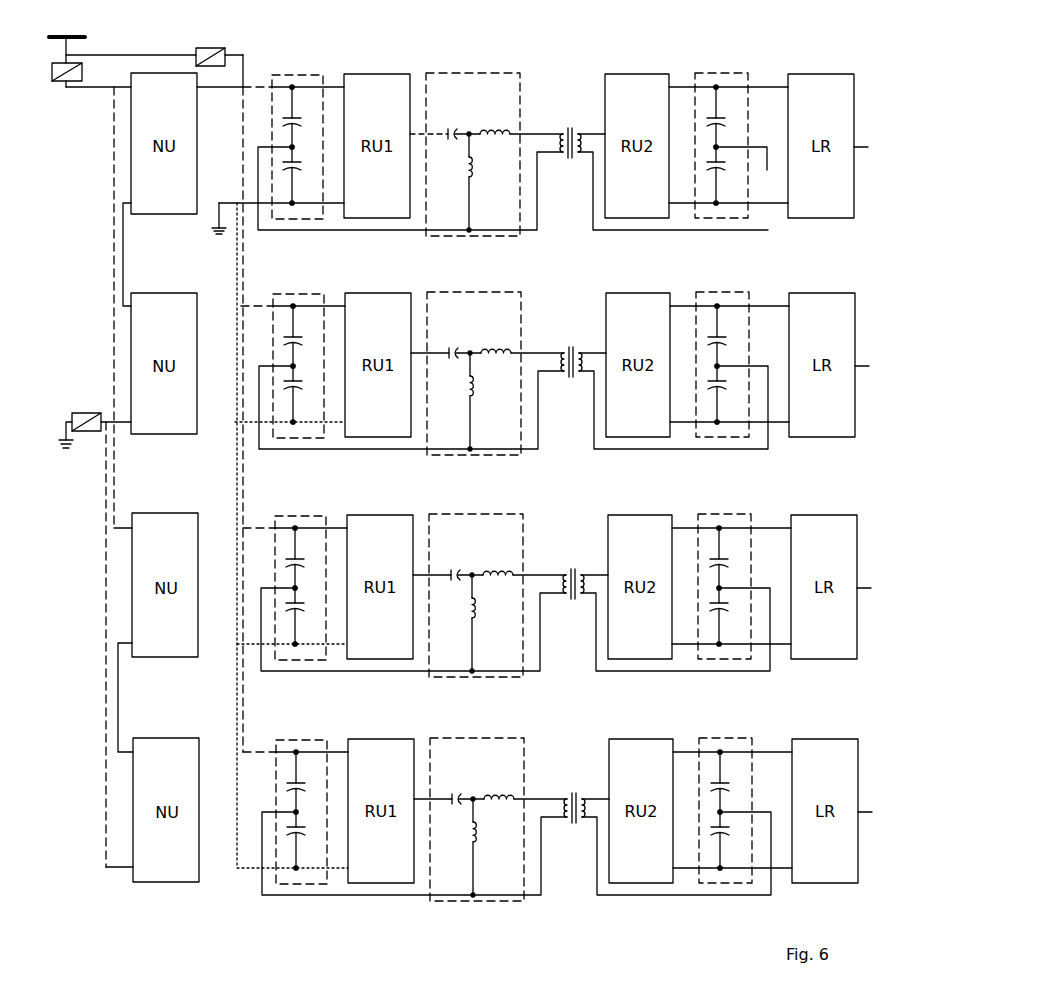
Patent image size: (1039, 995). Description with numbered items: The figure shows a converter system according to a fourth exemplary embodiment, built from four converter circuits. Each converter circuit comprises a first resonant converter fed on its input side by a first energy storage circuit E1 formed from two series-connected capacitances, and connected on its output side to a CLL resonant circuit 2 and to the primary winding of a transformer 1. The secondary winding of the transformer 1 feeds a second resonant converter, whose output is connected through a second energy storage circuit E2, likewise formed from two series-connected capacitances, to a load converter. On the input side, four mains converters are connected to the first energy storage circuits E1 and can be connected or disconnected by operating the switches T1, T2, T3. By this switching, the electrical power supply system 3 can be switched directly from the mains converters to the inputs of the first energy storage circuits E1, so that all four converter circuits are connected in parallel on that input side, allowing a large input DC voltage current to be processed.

The transformer 1 is at (561, 121).
The CLL resonant circuit 2 is at (462, 73).
The electrical power supply system 3 is at (67, 40).
The first energy storage circuit E1 is at (298, 75).
The second energy storage circuit E2 is at (730, 73).
The switch T1 is at (154, 58).
The switch T2 is at (67, 86).
The switch T3 is at (95, 420).